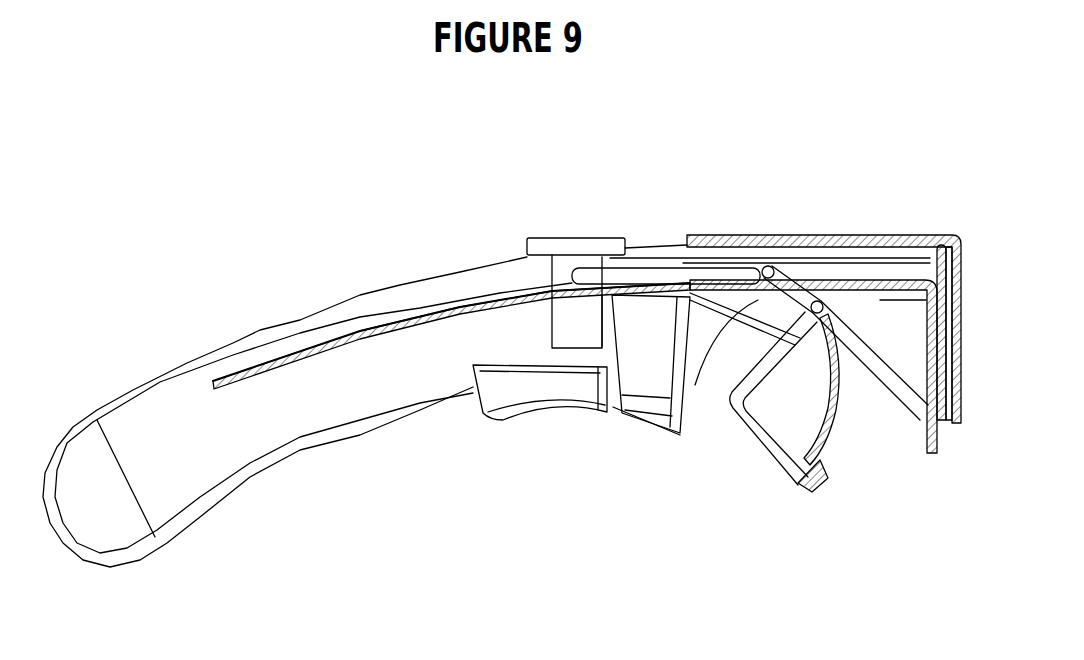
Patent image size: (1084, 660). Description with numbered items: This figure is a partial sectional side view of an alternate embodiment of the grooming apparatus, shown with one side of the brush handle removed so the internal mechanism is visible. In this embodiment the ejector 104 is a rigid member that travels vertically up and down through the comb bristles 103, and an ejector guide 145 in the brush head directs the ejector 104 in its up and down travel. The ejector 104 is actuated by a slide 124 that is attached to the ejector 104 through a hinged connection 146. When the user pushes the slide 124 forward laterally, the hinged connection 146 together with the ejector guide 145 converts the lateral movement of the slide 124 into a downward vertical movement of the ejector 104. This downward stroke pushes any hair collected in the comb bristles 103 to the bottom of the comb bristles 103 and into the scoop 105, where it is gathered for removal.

The slide 124 is at (527, 250).
The hinged connection 146 is at (762, 272).
The ejector 104 is at (935, 345).
The comb bristles 103 is at (927, 450).
The ejector guide 145 is at (943, 423).
The scoop 105 is at (767, 458).